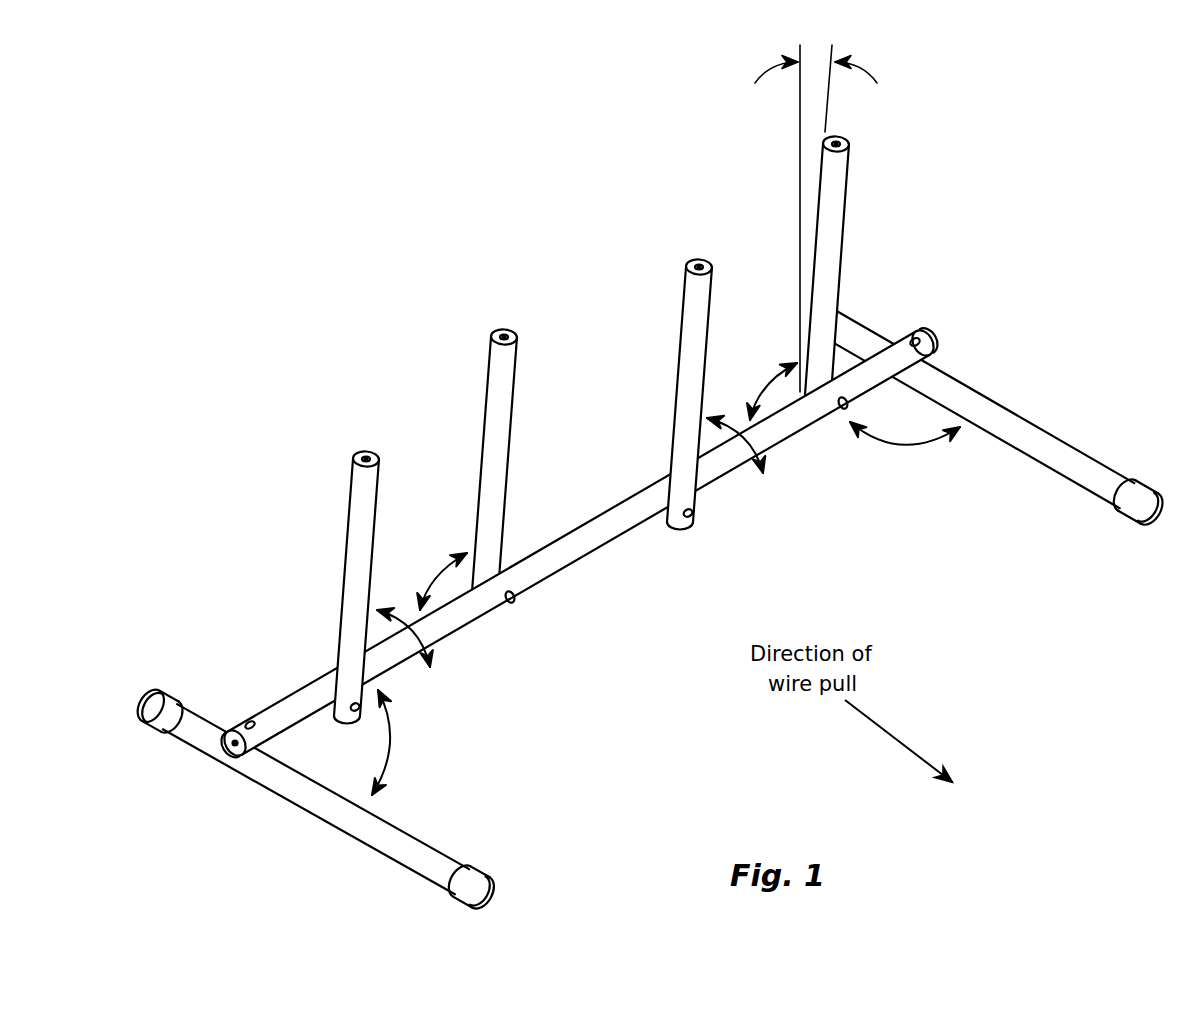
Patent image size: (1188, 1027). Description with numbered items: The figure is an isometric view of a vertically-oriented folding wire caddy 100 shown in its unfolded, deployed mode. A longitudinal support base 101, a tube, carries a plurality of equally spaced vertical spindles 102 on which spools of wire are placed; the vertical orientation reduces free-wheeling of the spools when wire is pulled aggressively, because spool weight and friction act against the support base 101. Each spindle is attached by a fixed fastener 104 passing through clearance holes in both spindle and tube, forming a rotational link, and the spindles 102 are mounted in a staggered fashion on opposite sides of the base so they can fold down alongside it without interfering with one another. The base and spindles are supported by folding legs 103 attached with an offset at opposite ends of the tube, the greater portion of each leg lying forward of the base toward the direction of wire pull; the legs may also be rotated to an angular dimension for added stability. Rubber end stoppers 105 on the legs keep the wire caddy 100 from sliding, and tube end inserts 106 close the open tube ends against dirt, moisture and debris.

The wire caddy 100 is at (582, 293).
The longitudinal support base 101 is at (617, 540).
The vertical spindles 102 is at (292, 558).
The folding legs 103 is at (405, 833).
The fixed fastener 104 is at (512, 603).
The rubber end stoppers 105 is at (1128, 520).
The tube end inserts 106 is at (368, 450).